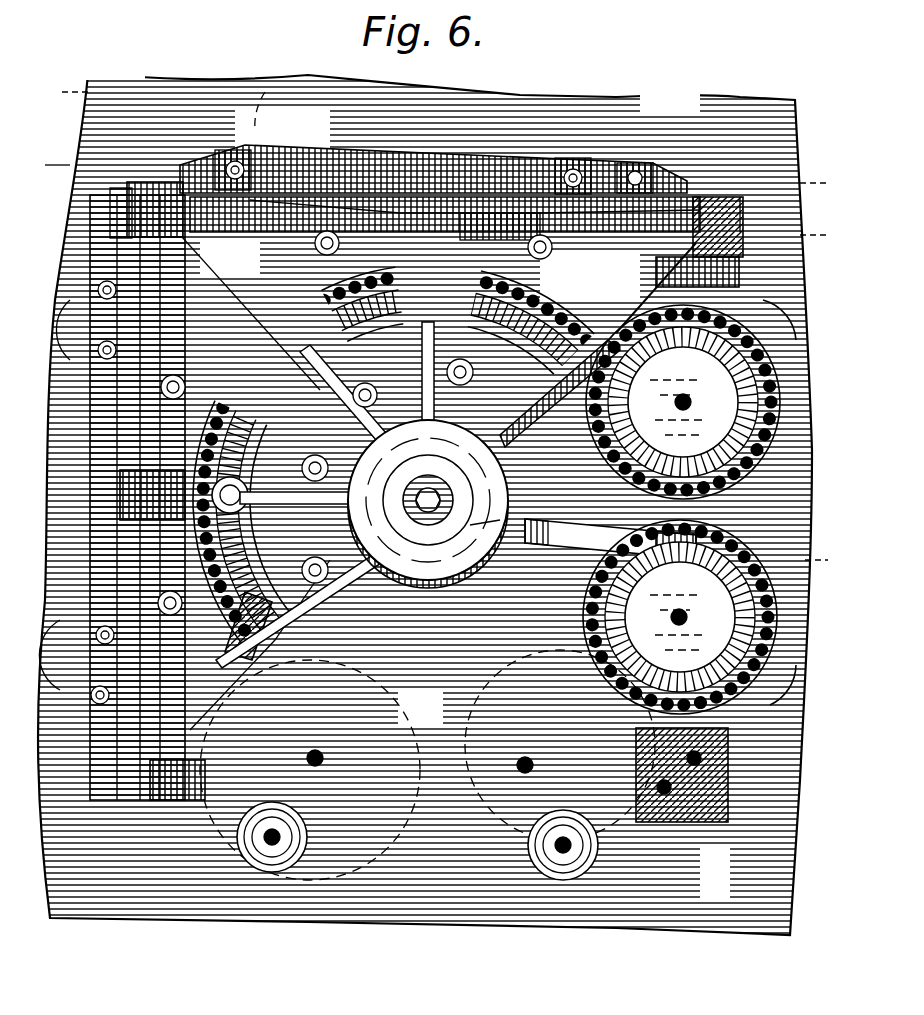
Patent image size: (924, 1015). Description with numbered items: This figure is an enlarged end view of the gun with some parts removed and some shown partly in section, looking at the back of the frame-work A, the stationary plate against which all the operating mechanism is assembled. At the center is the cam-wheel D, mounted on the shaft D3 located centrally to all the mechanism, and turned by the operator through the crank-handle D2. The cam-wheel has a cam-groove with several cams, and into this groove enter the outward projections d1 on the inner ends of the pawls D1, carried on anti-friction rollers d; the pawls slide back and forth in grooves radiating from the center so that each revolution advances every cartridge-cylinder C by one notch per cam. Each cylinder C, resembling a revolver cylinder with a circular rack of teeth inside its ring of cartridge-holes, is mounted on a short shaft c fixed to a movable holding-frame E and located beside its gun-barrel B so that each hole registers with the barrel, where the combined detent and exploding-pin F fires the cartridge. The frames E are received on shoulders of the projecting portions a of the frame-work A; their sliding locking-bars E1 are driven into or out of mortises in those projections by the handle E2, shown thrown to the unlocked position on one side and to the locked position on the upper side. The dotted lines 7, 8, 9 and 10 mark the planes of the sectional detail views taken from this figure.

The frame-work back A is at (680, 118).
The gun-barrels B is at (280, 832).
The cartridge-cylinders C is at (736, 540).
The cam-wheel D is at (428, 500).
The pawls D1 is at (260, 594).
The crank-handle D2 is at (325, 513).
The shaft D3 is at (420, 500).
The movable frame-work E is at (430, 170).
The sliding locking-bars E1 is at (222, 228).
The handle E2 is at (500, 248).
The combined detents and exploding-pins F is at (238, 160).
The projecting portions a is at (138, 192).
The shaft c is at (180, 382).
The anti-friction rollers d is at (344, 495).
The outward projections d1 is at (494, 453).
The dotted line 7 7 is at (438, 138).
The dotted line 8 8 is at (438, 201).
The dotted lines 9 9 is at (647, 545).
The dotted line 10 10 is at (264, 112).